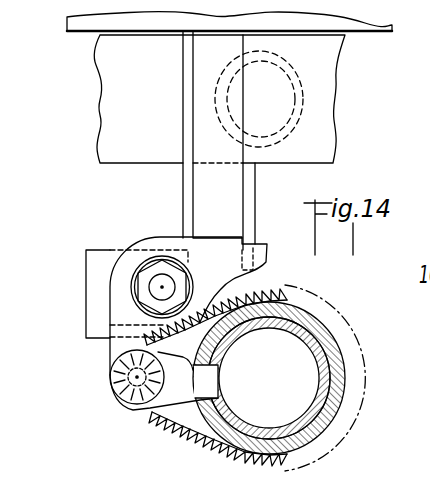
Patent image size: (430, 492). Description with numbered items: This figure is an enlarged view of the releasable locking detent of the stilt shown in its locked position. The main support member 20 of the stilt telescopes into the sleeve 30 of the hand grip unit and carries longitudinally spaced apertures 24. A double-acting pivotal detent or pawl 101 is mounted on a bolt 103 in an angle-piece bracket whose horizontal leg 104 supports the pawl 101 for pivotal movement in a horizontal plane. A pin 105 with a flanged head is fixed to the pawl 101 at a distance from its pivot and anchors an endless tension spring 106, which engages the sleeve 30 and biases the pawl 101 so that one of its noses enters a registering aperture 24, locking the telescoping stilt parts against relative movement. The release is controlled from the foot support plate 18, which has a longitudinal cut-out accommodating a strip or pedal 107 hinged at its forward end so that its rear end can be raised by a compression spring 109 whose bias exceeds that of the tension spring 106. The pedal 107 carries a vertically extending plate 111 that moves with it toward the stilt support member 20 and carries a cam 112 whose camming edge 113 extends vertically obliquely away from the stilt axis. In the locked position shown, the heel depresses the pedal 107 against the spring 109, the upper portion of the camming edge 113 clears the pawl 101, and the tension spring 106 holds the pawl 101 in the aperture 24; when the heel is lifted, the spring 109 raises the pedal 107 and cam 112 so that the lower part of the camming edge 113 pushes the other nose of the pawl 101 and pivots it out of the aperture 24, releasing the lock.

The foot support plate 18 is at (68, 22).
The strip 107 is at (118, 72).
The compression spring 109 is at (268, 104).
The plate 111 is at (192, 133).
The cam 112 is at (249, 212).
The camming edge 113 is at (252, 261).
The bolt 103 is at (159, 274).
The horizontal leg 104 is at (96, 290).
The pivotal detent 101 is at (122, 348).
The pin 105 is at (132, 410).
The endless tension spring 106 is at (187, 428).
The apertures 24 is at (218, 394).
The sleeve 30 is at (312, 322).
The main support member 20 is at (326, 396).